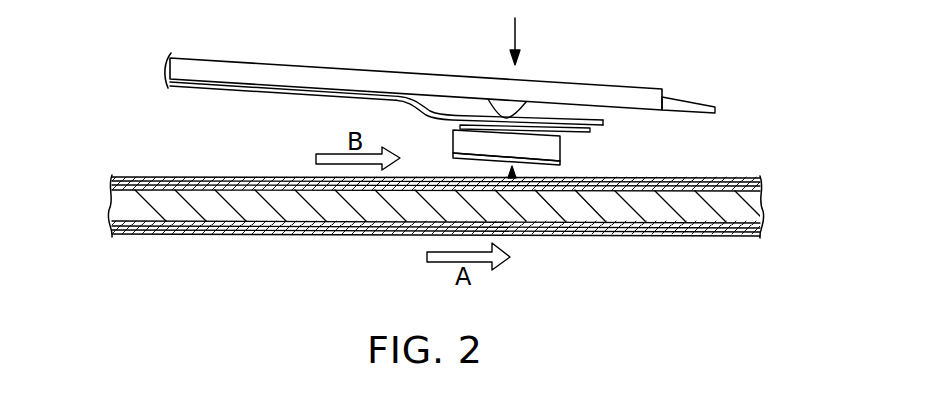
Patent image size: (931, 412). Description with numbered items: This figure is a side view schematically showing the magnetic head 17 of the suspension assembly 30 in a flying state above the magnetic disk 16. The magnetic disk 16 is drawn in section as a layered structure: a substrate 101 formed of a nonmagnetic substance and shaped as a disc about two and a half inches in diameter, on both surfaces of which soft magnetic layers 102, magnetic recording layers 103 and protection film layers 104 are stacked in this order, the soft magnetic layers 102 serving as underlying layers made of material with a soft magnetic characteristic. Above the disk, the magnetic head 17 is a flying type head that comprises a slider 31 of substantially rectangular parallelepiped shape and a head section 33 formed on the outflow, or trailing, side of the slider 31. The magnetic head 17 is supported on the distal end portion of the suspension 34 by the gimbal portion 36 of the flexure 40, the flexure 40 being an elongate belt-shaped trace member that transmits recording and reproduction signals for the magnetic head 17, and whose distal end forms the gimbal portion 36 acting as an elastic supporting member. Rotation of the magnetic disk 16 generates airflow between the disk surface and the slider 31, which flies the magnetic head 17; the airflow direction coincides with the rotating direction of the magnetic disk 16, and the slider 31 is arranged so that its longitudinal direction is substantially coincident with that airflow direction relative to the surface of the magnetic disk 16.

The suspension assembly 30 is at (365, 52).
The suspension 34 is at (260, 72).
The flexure 40 is at (220, 87).
The gimbal portion 36 is at (454, 97).
The slider 31 is at (525, 143).
The head section 33 is at (553, 148).
The magnetic head 17 is at (514, 178).
The magnetic disk 16 is at (152, 146).
The substrate 101 is at (213, 217).
The soft magnetic layer 102 is at (113, 188).
The magnetic recording layer 103 is at (180, 181).
The protection film layer 104 is at (127, 176).